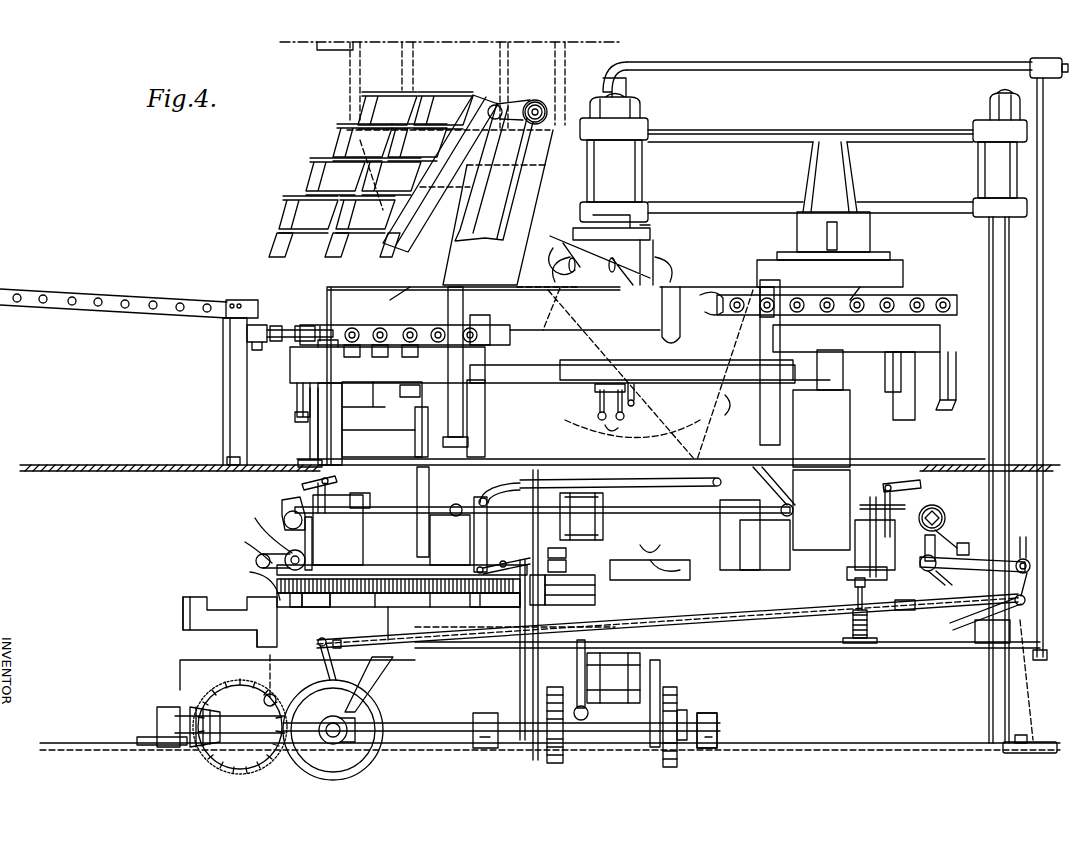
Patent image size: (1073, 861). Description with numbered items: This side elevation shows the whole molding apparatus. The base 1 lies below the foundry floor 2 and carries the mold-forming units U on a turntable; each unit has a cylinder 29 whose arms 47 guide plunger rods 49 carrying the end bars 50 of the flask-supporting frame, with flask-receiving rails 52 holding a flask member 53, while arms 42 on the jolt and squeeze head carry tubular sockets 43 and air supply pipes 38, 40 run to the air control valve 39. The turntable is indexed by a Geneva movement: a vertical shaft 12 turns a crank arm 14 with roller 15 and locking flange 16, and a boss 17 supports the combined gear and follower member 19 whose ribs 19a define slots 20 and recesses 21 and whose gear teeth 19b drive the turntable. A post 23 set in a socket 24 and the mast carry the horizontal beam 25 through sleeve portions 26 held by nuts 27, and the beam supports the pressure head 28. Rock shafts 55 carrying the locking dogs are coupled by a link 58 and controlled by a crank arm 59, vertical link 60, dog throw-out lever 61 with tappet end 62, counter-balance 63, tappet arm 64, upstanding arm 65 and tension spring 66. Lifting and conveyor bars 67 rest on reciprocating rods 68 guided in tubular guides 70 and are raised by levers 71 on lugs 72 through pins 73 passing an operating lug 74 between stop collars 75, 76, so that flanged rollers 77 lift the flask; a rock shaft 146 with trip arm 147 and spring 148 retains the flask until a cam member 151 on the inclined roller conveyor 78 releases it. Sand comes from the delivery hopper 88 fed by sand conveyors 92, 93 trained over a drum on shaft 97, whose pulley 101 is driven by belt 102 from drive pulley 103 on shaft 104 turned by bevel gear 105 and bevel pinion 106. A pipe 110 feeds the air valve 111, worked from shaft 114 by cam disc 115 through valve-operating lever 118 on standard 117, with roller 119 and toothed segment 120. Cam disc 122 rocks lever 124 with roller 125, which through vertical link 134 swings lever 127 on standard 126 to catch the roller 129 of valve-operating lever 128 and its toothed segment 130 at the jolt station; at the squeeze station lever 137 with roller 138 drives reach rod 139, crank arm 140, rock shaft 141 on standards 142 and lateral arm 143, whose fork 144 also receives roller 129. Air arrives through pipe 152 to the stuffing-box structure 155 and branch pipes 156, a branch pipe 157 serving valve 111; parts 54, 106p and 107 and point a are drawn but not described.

The base 1 is at (805, 630).
The floor of the foundry 2 is at (112, 465).
The short vertical shaft 12 is at (255, 578).
The crank arm 14 is at (218, 620).
The roller 15 is at (185, 597).
The segmental locking flange 16 is at (298, 607).
The boss 17 is at (400, 652).
The combined gear and follower member 19 is at (410, 640).
The ribs 19a is at (255, 640).
The gear teeth 19b is at (247, 548).
The radial slots 20 is at (318, 607).
The segmental recesses 21 is at (347, 600).
The vertical post 23 is at (1009, 243).
The socket 24 is at (985, 643).
The horizontal beam 25 is at (715, 130).
The sleeve portions 26 is at (608, 160).
The nuts 27 is at (628, 106).
The pressure head 28 is at (855, 230).
The cylinders 29 is at (510, 559).
The air supply pipe 38 is at (295, 500).
The air control valve 39 is at (282, 506).
The air supply pipe 40 is at (312, 550).
The arms 42 is at (412, 385).
The tubular sockets 43 is at (340, 448).
The horizontal extensions or arms 47 is at (385, 467).
The vertical plunger rods 49 is at (342, 430).
The end bars 50 is at (470, 372).
The flask-receiving rails 52 is at (600, 290).
The flask member 53 is at (340, 290).
The bracket 54 is at (352, 385).
The horizontal rock shafts 55 is at (410, 530).
The link 58 is at (303, 486).
The crank arm 59 is at (498, 495).
The vertical link 60 is at (480, 540).
The dog throw-out lever 61 is at (490, 550).
The tappet end 62 is at (395, 570).
The counter-balance 63 is at (372, 497).
The tappet arm 64 is at (372, 535).
The upstanding arm 65 is at (855, 588).
The tension spring 66 is at (867, 622).
The lifting and conveyor bars 67 is at (400, 330).
The vertically reciprocating rods 68 is at (297, 389).
The depending tubular guides 70 is at (290, 364).
The levers 71 is at (295, 418).
The depending lug 72 is at (676, 402).
The pins 73 is at (605, 392).
The operating lug 74 is at (619, 392).
The adjustable nuts or stop collars 75 is at (634, 392).
The stop collars 76 is at (750, 470).
The flanged rollers 77 is at (372, 325).
The roller conveyor 78 is at (34, 290).
The delivery hopper 88 is at (540, 192).
The endless sand conveyor 92 is at (408, 205).
The smaller endless conveyor 93 is at (308, 184).
The shaft 97 is at (546, 107).
The pulley 101 is at (537, 99).
The belt 102 is at (465, 240).
The drive pulley 103 is at (383, 712).
The shaft 104 is at (215, 745).
The bevel gear 105 is at (230, 685).
The bevel pinion 106 is at (225, 700).
The bracket 106p is at (398, 295).
The post 107 is at (465, 320).
The pipe 110 is at (593, 680).
The air valve 111 is at (589, 710).
The shaft 114 is at (445, 735).
The cam disc 115 is at (678, 693).
The standard 117 is at (662, 672).
The valve-operating lever 118 is at (688, 712).
The roller 119 is at (718, 720).
The toothed segment 120 is at (700, 648).
The cam disc 122 is at (545, 740).
The lever 124 is at (530, 697).
The roller 125 is at (578, 648).
The standard 126 is at (515, 608).
The lever 127 is at (570, 562).
The valve-operating lever 128 is at (556, 592).
The roller 129 is at (975, 565).
The toothed segment 130 is at (739, 575).
The vertical link 134 is at (546, 600).
The lever 137 is at (334, 662).
The roller 138 is at (272, 678).
The reach rod 139 is at (448, 640).
The crank arm 140 is at (990, 612).
The rock shaft 141 is at (1023, 548).
The standards 142 is at (1020, 690).
The lateral arm 143 is at (965, 572).
The fork 144 is at (962, 540).
The short rock shaft 146 is at (283, 325).
The lateral trip arm 147 is at (227, 342).
The spring 148 is at (306, 325).
The cam member 151 is at (247, 305).
The pipe 152 is at (862, 62).
The stuffing-box structure 155 is at (655, 252).
The branch pipes 156 is at (578, 258).
The branch pipe 157 is at (1037, 80).
The point a is at (648, 230).
The mold-forming units U is at (700, 265).